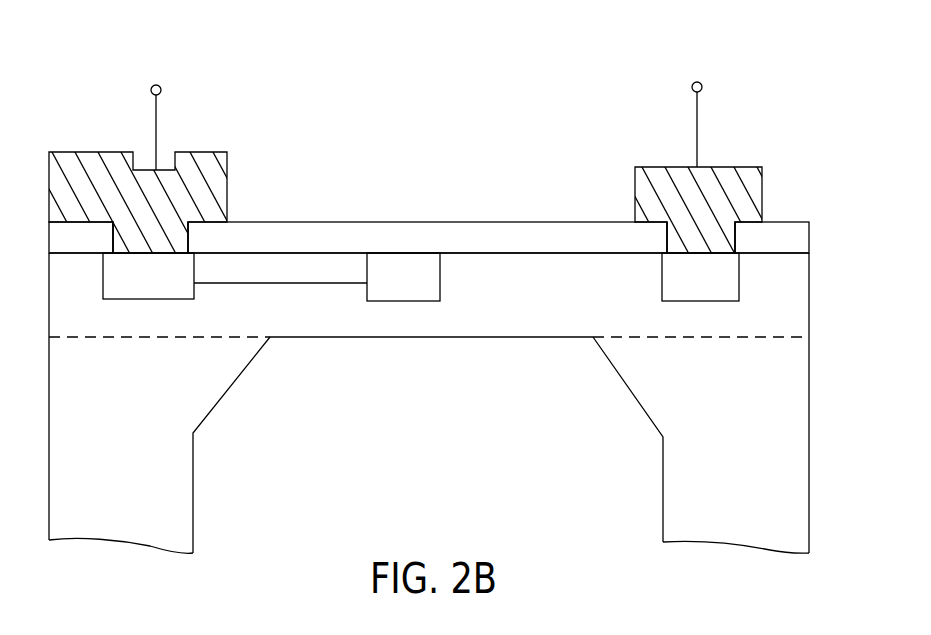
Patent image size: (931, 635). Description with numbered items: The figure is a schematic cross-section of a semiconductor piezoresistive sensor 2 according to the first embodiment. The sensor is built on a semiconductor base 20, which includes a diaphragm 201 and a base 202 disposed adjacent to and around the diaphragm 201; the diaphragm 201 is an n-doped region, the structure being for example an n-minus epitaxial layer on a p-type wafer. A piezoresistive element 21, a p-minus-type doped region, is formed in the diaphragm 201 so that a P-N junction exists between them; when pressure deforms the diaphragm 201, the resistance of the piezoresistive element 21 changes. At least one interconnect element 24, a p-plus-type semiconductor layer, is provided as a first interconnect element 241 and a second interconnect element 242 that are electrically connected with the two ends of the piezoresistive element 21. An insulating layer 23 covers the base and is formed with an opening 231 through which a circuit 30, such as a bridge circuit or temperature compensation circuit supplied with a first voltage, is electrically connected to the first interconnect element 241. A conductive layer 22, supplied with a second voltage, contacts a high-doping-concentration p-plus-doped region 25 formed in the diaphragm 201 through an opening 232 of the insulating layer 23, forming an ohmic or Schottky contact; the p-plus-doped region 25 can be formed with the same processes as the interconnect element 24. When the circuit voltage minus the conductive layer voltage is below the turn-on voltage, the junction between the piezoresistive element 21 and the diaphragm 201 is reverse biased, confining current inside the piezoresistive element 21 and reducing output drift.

The semiconductor piezoresistive sensor 2 is at (56, 46).
The semiconductor base 20 is at (429, 403).
The diaphragm 201 is at (538, 328).
The base 202 is at (648, 400).
The piezoresistive element 21 is at (307, 283).
The interconnect element 24 is at (279, 356).
The first interconnect element 241 is at (160, 296).
The second interconnect element 242 is at (405, 301).
The p+-doped region 25 is at (739, 273).
The insulating layer 23 is at (600, 222).
The opening 231 is at (174, 230).
The opening 232 is at (720, 245).
The circuit 30 is at (68, 157).
The conductive layer 22 is at (650, 170).